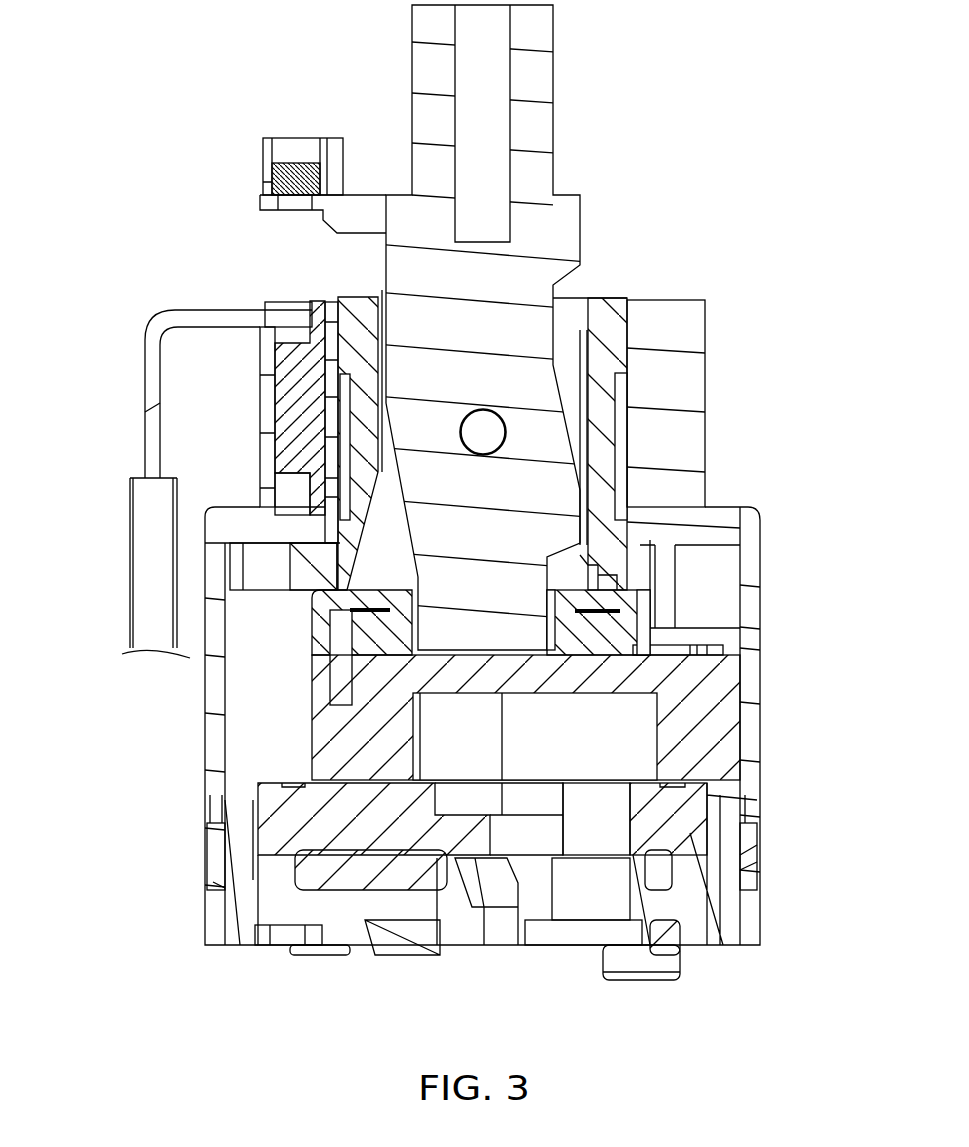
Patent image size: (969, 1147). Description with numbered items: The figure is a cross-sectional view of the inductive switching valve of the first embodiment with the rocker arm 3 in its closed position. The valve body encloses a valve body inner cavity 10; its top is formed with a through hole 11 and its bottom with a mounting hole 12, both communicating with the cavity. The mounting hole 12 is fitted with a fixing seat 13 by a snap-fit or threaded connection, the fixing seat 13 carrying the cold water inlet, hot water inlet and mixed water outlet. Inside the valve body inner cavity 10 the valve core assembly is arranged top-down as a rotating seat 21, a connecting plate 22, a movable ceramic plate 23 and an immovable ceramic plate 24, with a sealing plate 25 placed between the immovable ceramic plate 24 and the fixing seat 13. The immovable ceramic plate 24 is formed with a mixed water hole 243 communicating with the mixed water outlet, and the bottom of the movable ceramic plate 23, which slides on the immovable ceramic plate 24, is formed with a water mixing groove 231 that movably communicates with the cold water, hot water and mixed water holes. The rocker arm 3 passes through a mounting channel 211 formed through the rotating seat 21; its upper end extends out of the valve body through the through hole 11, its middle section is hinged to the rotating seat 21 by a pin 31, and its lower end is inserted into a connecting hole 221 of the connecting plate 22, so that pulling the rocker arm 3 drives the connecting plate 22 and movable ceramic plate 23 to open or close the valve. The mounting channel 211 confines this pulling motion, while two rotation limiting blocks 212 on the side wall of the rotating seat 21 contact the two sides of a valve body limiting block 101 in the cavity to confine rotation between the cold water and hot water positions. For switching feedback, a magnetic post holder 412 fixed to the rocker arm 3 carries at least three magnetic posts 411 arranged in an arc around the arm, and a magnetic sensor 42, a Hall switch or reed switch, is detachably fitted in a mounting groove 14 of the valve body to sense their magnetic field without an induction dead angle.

The rocker arm 3 is at (542, 224).
The pin 31 is at (490, 428).
The magnetic posts 411 is at (290, 180).
The magnetic post holder 412 is at (367, 200).
The magnetic sensor 42 is at (302, 370).
The through hole 11 is at (302, 370).
The mounting groove 14 is at (292, 492).
The valve body inner cavity 10 is at (260, 738).
The rotation limiting blocks 212 is at (258, 570).
The mounting channel 211 is at (572, 330).
The rotating seat 21 is at (598, 453).
The connecting hole 221 is at (672, 583).
The valve body limiting block 101 is at (668, 578).
The connecting plate 22 is at (630, 632).
The movable ceramic plate 23 is at (710, 703).
The water mixing groove 231 is at (628, 710).
The immovable ceramic plate 24 is at (290, 830).
The mixed water hole 243 is at (603, 827).
The sealing plate 25 is at (318, 880).
The fixing seat 13 is at (345, 915).
The mounting hole 12 is at (742, 858).